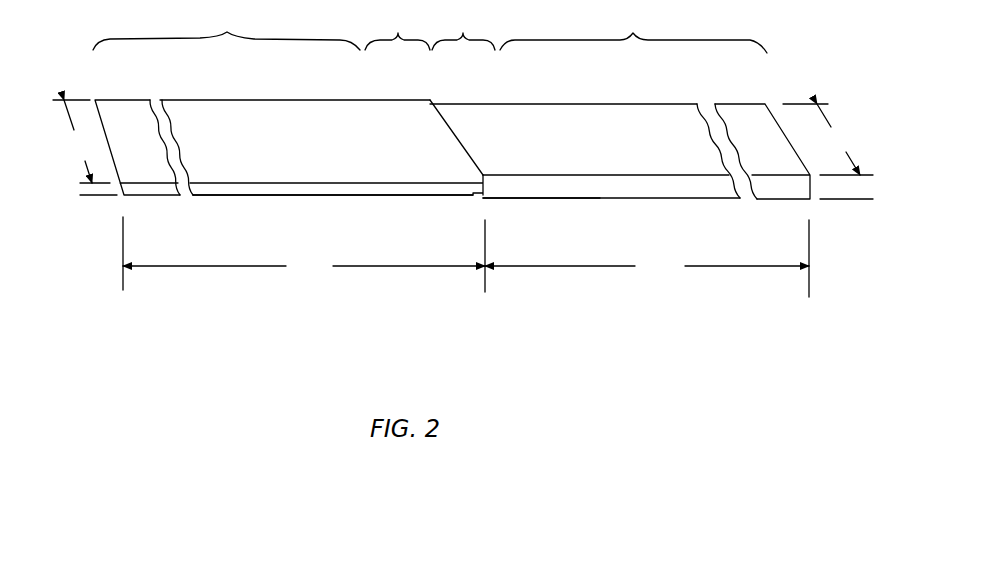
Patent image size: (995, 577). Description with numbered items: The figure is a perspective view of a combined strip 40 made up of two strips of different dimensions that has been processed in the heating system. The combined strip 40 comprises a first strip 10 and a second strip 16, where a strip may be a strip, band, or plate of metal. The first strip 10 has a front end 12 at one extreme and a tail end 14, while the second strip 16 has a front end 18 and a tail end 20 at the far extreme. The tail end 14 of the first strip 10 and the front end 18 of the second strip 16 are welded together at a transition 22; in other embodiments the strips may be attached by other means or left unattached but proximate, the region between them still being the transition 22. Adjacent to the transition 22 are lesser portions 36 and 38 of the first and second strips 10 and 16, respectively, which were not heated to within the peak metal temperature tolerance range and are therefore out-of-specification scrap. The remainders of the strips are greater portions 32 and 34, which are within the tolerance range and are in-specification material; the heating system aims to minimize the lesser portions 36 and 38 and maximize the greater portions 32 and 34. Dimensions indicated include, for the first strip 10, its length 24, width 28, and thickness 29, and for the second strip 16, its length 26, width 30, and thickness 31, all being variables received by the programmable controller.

The first strip 10 is at (599, 103).
The front end 12 is at (753, 102).
The tail end 14 is at (477, 198).
The second strip 16 is at (278, 98).
The front end 18 is at (452, 200).
The tail end 20 is at (106, 98).
The transition 22 is at (443, 118).
The length 24 is at (647, 258).
The length 26 is at (304, 254).
The width 28 is at (828, 139).
The thickness 29 is at (852, 190).
The width 30 is at (81, 141).
The thickness 31 is at (80, 183).
The greater portion 32 is at (633, 28).
The greater portion 34 is at (226, 27).
The lesser portion 36 is at (463, 27).
The lesser portion 38 is at (397, 27).
The combined strip 40 is at (824, 29).